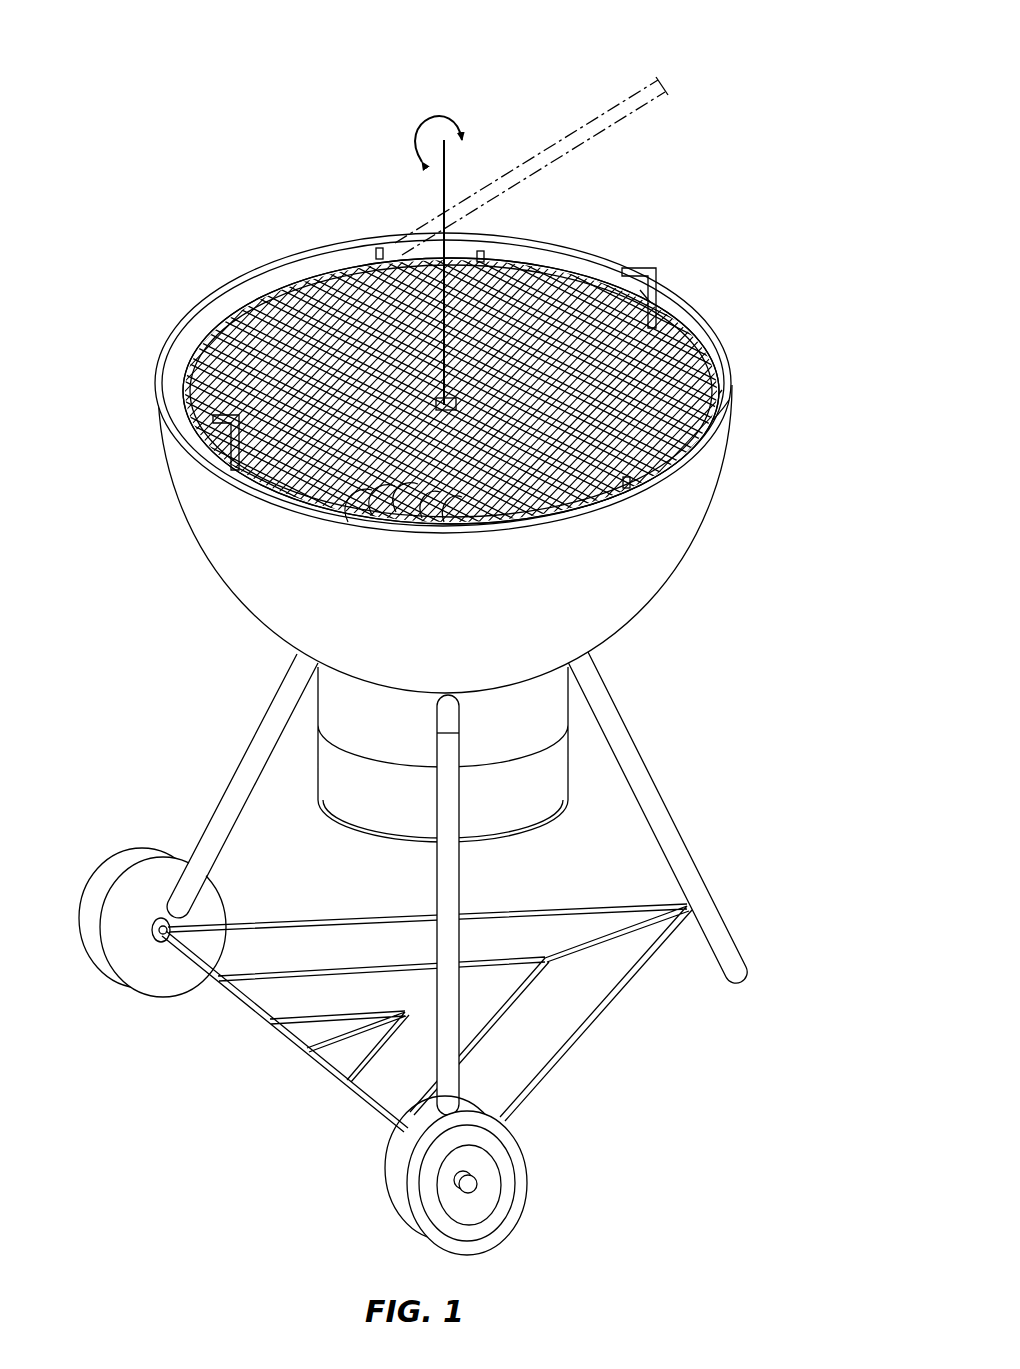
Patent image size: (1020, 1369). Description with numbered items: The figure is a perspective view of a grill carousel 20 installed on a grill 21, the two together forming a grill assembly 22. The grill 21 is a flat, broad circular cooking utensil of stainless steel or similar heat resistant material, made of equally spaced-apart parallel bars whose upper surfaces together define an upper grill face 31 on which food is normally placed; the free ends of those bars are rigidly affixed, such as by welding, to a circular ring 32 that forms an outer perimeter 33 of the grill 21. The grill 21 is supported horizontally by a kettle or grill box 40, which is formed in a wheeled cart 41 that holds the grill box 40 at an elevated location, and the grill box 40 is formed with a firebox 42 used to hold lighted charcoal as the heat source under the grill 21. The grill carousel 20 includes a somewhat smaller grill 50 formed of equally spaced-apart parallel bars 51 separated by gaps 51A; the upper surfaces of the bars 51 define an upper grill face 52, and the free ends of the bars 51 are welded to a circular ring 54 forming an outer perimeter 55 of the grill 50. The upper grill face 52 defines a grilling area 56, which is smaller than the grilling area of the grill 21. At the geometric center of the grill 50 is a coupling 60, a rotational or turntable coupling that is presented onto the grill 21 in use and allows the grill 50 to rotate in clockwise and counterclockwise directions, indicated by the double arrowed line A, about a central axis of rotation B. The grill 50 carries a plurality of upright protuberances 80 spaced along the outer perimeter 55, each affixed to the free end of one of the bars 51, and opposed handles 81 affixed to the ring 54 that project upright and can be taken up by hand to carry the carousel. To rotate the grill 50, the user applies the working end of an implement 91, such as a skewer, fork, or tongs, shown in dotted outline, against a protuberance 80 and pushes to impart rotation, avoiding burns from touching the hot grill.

The grill carousel 20 is at (585, 290).
The grill 21 is at (170, 412).
The grill assembly 22 is at (724, 266).
The upper grill face 31 is at (189, 370).
The circular ring 32 is at (713, 407).
The outer perimeter 33 is at (699, 411).
The grill box 40 is at (673, 560).
The wheeled cart 41 is at (643, 767).
The firebox 42 is at (550, 793).
The grill 50 is at (319, 285).
The bars 51 is at (355, 515).
The gaps 51A is at (468, 521).
The upper grill face 52 is at (288, 344).
The circular ring 54 is at (677, 443).
The outer perimeter 55 is at (667, 460).
The grilling area 56 is at (567, 383).
The coupling 60 is at (464, 412).
The protuberances 80 is at (380, 250).
The handles 81 is at (642, 287).
The rotisserie handle 91 is at (597, 112).
The double arrowed line A is at (462, 114).
The axis of rotation B is at (455, 147).